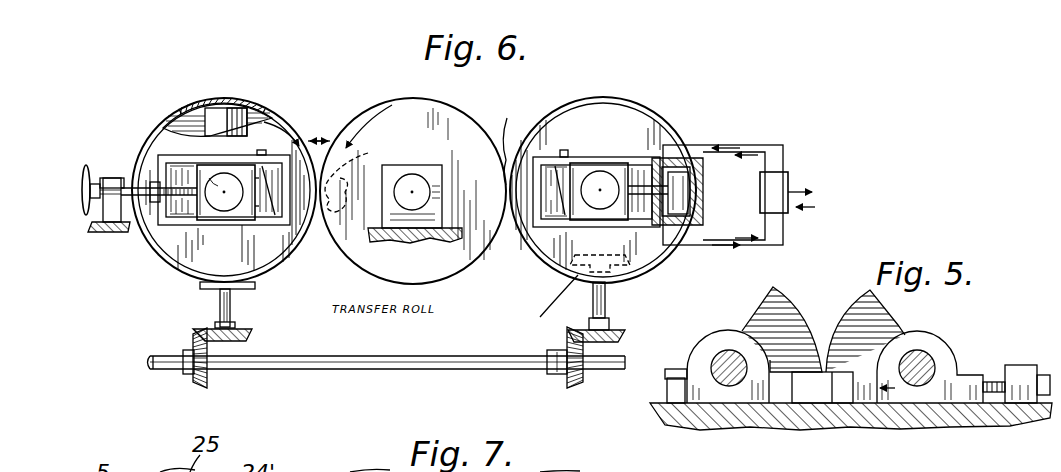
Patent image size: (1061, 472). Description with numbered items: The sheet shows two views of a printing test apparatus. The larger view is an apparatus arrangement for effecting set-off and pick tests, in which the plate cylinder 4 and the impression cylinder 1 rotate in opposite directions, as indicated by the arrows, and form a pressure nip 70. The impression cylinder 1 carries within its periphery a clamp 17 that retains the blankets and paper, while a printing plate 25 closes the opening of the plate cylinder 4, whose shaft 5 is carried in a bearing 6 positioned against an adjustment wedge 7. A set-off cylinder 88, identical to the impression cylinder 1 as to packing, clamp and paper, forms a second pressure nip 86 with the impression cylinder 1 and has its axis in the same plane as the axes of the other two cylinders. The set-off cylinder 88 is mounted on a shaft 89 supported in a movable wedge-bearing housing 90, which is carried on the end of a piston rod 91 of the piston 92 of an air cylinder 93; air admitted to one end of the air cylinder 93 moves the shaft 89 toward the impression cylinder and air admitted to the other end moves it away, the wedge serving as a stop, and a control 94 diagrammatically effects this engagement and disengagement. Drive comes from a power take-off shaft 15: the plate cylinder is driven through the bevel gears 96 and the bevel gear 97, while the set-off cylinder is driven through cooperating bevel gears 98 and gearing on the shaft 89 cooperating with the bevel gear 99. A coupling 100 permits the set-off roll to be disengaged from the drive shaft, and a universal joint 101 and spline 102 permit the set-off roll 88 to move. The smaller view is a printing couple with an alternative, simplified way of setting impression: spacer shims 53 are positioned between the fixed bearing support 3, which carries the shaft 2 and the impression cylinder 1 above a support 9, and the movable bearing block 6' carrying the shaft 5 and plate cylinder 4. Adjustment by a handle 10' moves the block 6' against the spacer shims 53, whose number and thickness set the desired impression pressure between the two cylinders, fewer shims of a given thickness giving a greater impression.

In FIG. 6, the impression cylinder 1 is at (408, 268).
In FIG. 5, the impression cylinder 1 is at (790, 305).
In FIG. 5, the rotatable shaft 2 is at (722, 350).
In FIG. 5, the frame bearing support 3 is at (698, 396).
In FIG. 6, the plate cylinder 4 is at (165, 240).
In FIG. 5, the plate cylinder 4 is at (848, 312).
In FIG. 6, the plate cylinder shaft 5 is at (212, 178).
In FIG. 5, the plate cylinder shaft 5 is at (926, 356).
In FIG. 6, the bearing 6 is at (227, 215).
In FIG. 5, the movable bearing block 6' is at (930, 396).
In FIG. 6, the adjustment wedge 7 is at (263, 205).
In FIG. 5, the support 9 is at (895, 400).
In FIG. 5, the handle 10' is at (1016, 364).
In FIG. 6, the power take-off shaft 15 is at (425, 356).
In FIG. 6, the clamp 17 is at (358, 158).
In FIG. 6, the printing plate 25 is at (238, 106).
In FIG. 5, the spacer shims 53 is at (842, 395).
In FIG. 6, the pressure nip 70 is at (332, 162).
In FIG. 6, the pressure nip 86 is at (512, 139).
In FIG. 6, the set-off cylinder 88 is at (556, 104).
In FIG. 6, the shaft 89 is at (606, 185).
In FIG. 6, the wedge-bearing housing 90 is at (578, 170).
In FIG. 6, the piston rod 91 is at (650, 220).
In FIG. 6, the piston 92 is at (680, 172).
In FIG. 6, the air cylinder 93 is at (700, 240).
In FIG. 6, the control 94 is at (800, 215).
In FIG. 6, the bevel gears 96 is at (195, 331).
In FIG. 6, the bevel gear 97 is at (255, 284).
In FIG. 6, the bevel gears 98 is at (628, 338).
In FIG. 6, the bevel gear 99 is at (554, 301).
In FIG. 6, the coupling 100 is at (555, 378).
In FIG. 6, the universal joint 101 is at (612, 322).
In FIG. 6, the spline 102 is at (608, 302).